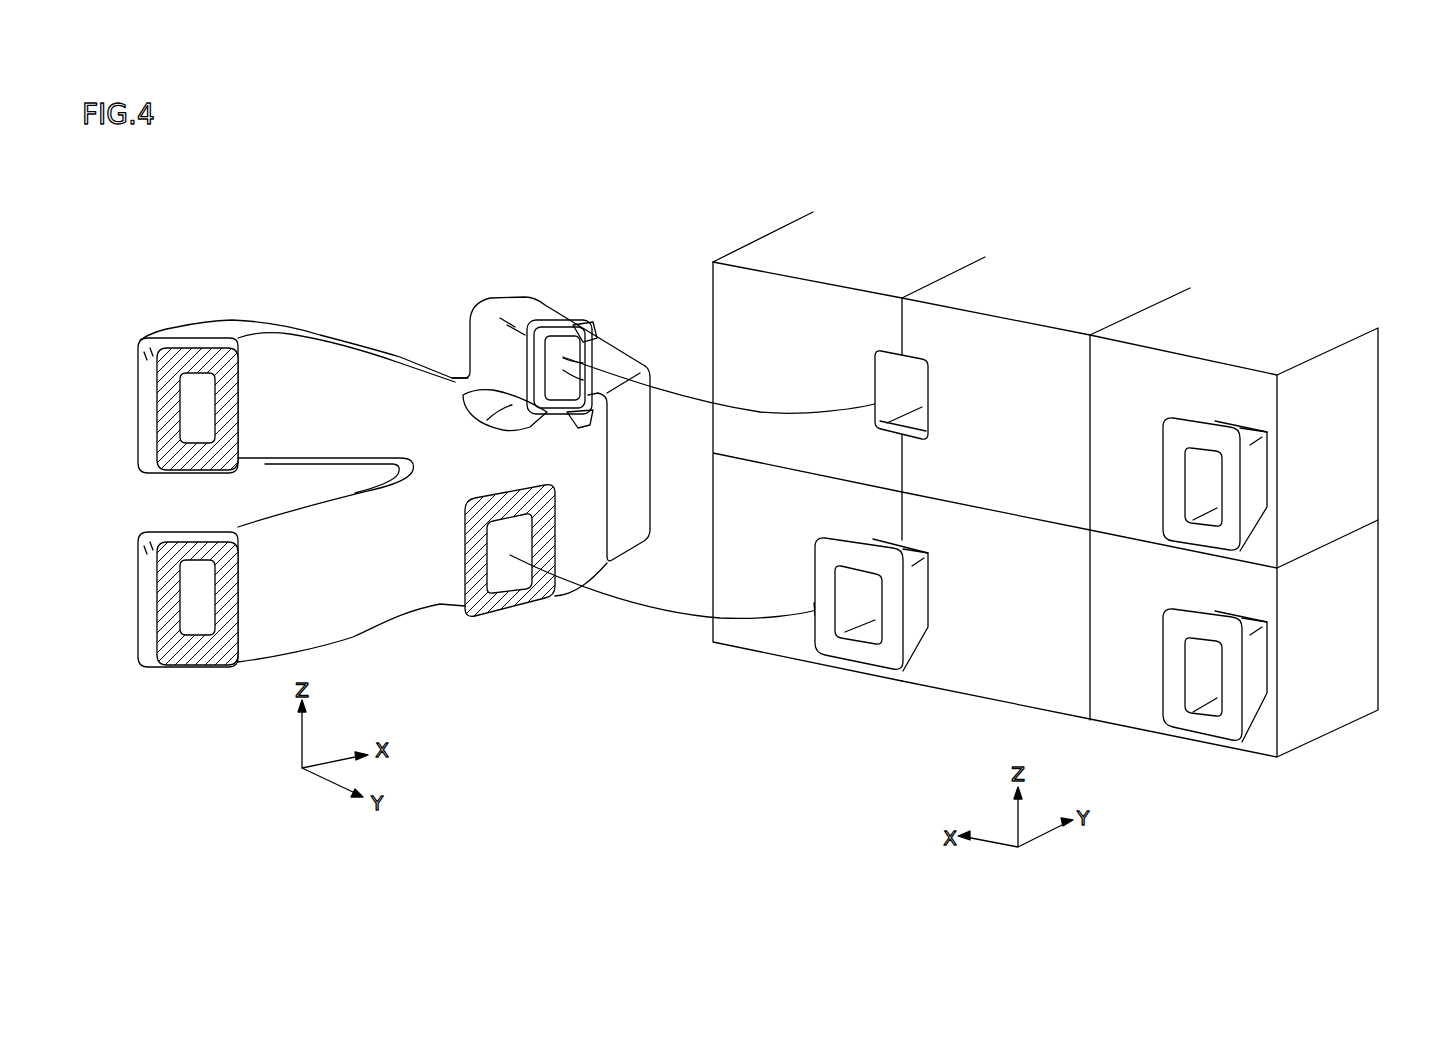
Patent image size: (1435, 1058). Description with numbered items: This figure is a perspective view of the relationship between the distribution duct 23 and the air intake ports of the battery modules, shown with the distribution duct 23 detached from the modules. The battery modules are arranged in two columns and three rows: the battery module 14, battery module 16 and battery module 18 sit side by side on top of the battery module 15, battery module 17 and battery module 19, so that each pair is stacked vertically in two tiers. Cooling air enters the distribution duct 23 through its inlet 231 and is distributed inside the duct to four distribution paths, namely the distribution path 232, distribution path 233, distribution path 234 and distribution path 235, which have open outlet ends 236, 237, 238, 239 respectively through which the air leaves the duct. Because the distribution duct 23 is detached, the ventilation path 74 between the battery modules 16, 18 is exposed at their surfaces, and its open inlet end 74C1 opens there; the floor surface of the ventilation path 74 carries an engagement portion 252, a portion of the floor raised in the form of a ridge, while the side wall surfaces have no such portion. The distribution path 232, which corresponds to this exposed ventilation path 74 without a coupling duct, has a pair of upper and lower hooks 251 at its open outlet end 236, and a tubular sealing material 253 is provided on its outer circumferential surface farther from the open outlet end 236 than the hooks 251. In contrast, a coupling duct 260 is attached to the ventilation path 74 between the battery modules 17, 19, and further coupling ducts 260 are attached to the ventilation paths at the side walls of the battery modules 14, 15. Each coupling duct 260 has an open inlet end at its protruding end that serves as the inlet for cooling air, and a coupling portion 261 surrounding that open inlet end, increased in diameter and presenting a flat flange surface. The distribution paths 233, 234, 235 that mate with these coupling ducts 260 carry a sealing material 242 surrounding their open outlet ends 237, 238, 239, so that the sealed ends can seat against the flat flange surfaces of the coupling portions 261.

The distribution duct 23 is at (371, 322).
The distribution path 234 is at (293, 353).
The distribution path 235 is at (270, 602).
The open outlet end 238 is at (198, 388).
The open outlet end 239 is at (193, 613).
The sealing material 242 is at (170, 410).
The distribution path 232 is at (510, 357).
The tubular sealing material 253 is at (547, 330).
The hooks 251 is at (590, 320).
The open outlet end 236 is at (567, 358).
The inlet 231 is at (653, 388).
The distribution path 233 is at (560, 572).
The open outlet end 237 is at (502, 570).
The battery module 18 is at (830, 250).
The battery module 16 is at (1060, 297).
The battery module 14 is at (1237, 335).
The battery module 19 is at (772, 637).
The battery module 17 is at (1010, 687).
The battery module 15 is at (1142, 712).
The ventilation path 74 is at (887, 350).
The open inlet end 74C1 is at (910, 372).
The engagement portion 252 is at (910, 427).
The coupling duct 260 is at (917, 618).
The coupling portion 261 is at (855, 652).